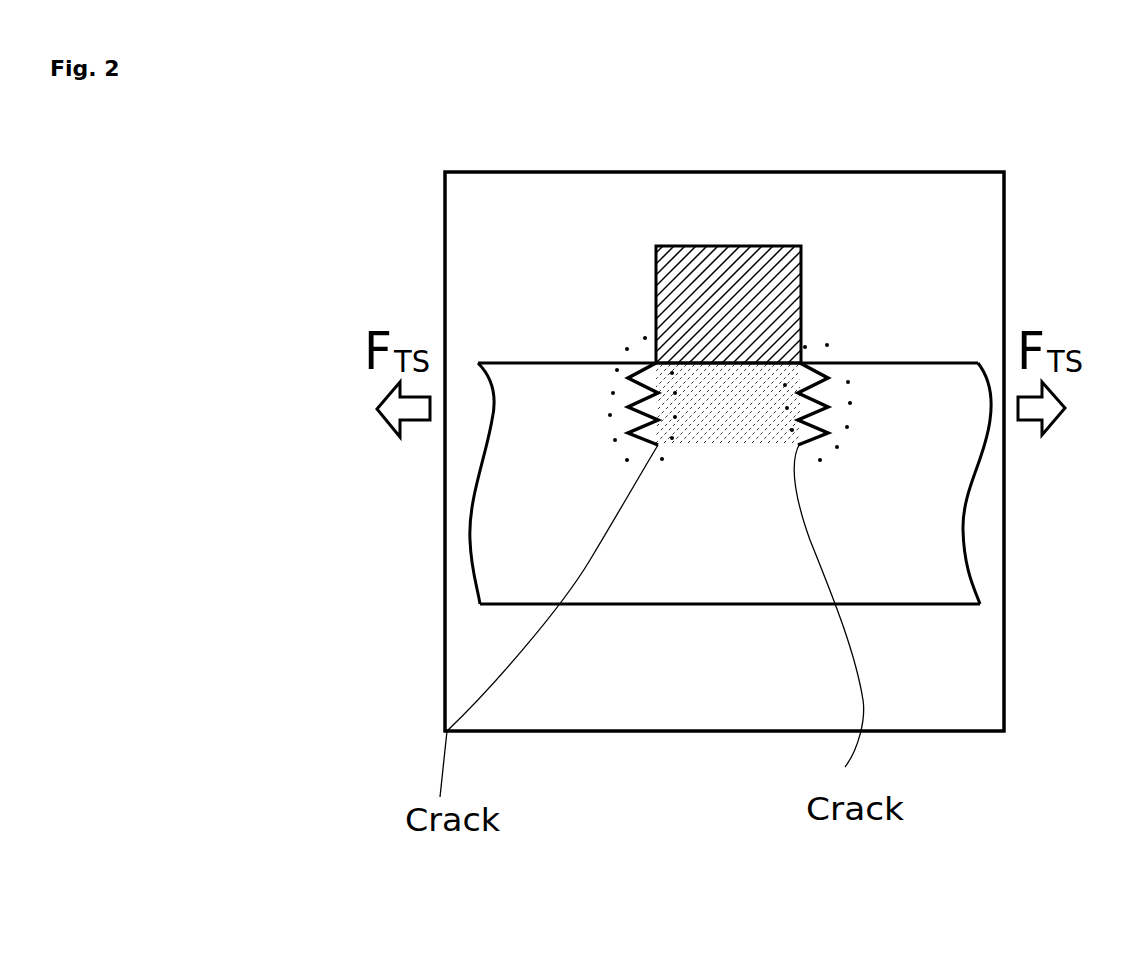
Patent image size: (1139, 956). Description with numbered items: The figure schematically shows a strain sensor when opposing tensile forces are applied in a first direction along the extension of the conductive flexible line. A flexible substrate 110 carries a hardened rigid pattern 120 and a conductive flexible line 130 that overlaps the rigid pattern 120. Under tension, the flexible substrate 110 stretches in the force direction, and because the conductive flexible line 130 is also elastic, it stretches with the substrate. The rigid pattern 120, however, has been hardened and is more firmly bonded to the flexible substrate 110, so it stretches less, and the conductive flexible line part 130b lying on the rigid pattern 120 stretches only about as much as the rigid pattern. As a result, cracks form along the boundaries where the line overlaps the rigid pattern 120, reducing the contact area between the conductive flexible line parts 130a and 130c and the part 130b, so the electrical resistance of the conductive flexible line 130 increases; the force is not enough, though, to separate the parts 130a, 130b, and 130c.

The flexible substrate 110 is at (648, 683).
The rigid pattern 120 is at (678, 282).
The conductive flexible line 130 is at (498, 443).
The conductive flexible line part 130a is at (510, 400).
The conductive flexible line part on the rigid pattern 130b is at (752, 392).
The conductive flexible line part 130c is at (920, 390).